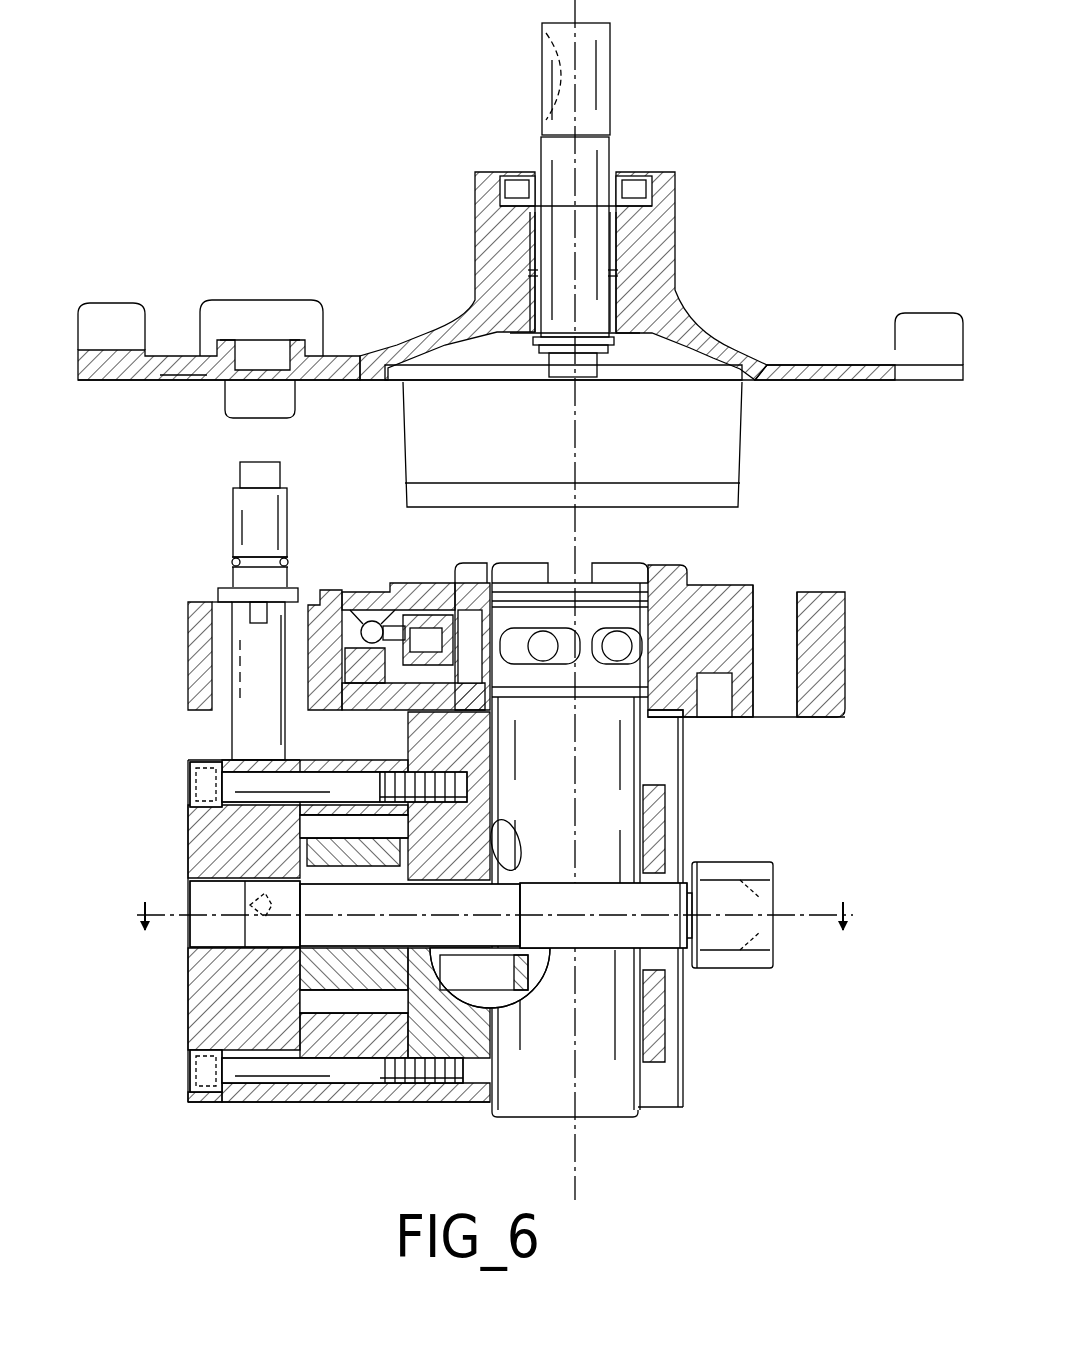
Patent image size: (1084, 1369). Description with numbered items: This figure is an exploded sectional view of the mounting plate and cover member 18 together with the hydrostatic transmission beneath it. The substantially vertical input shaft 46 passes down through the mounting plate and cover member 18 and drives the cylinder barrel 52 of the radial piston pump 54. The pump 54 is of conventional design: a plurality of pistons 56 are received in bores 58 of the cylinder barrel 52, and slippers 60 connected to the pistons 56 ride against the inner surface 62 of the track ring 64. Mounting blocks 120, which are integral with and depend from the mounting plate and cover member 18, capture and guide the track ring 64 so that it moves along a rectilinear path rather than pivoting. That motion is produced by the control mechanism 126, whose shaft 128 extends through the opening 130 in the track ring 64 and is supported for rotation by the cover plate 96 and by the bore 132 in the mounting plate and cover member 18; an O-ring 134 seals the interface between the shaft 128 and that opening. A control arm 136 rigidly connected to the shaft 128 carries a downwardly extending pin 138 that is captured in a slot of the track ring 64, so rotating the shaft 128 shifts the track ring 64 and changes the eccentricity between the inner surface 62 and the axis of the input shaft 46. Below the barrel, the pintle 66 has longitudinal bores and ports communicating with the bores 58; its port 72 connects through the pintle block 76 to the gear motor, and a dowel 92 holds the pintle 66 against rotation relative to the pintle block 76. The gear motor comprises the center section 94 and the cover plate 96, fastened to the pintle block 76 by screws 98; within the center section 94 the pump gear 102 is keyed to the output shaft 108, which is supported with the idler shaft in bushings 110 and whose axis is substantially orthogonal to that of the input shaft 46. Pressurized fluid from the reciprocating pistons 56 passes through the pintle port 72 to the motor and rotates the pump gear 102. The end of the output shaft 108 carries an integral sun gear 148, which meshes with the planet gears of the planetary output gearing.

The input shaft 46 is at (605, 105).
The mounting plate and cover member 18 is at (690, 316).
The bore 132 is at (244, 356).
The mounting blocks 120 is at (742, 434).
The shaft 128 is at (240, 503).
The control mechanism 126 is at (204, 589).
The O-ring 134 is at (232, 562).
The control arm 136 is at (220, 594).
The pin 138 is at (250, 612).
The opening 130 is at (212, 690).
The slippers 60 is at (372, 620).
The pistons 56 is at (383, 620).
The bores 58 is at (478, 610).
The cylinder barrel 52 is at (710, 598).
The inner surface 62 is at (793, 620).
The radial piston pump 54 is at (508, 838).
The track ring 64 is at (845, 630).
The pintle 66 is at (648, 742).
The port 72 is at (510, 832).
The screws 98 is at (235, 787).
The sun gear 148 is at (745, 862).
The bushings 110 is at (422, 948).
The pump gear 102 is at (325, 966).
The output shaft 108 is at (655, 938).
The cover plate 96 is at (187, 1012).
The dowel 92 is at (493, 975).
The center section 94 is at (350, 1102).
The pintle block 76 is at (465, 1107).